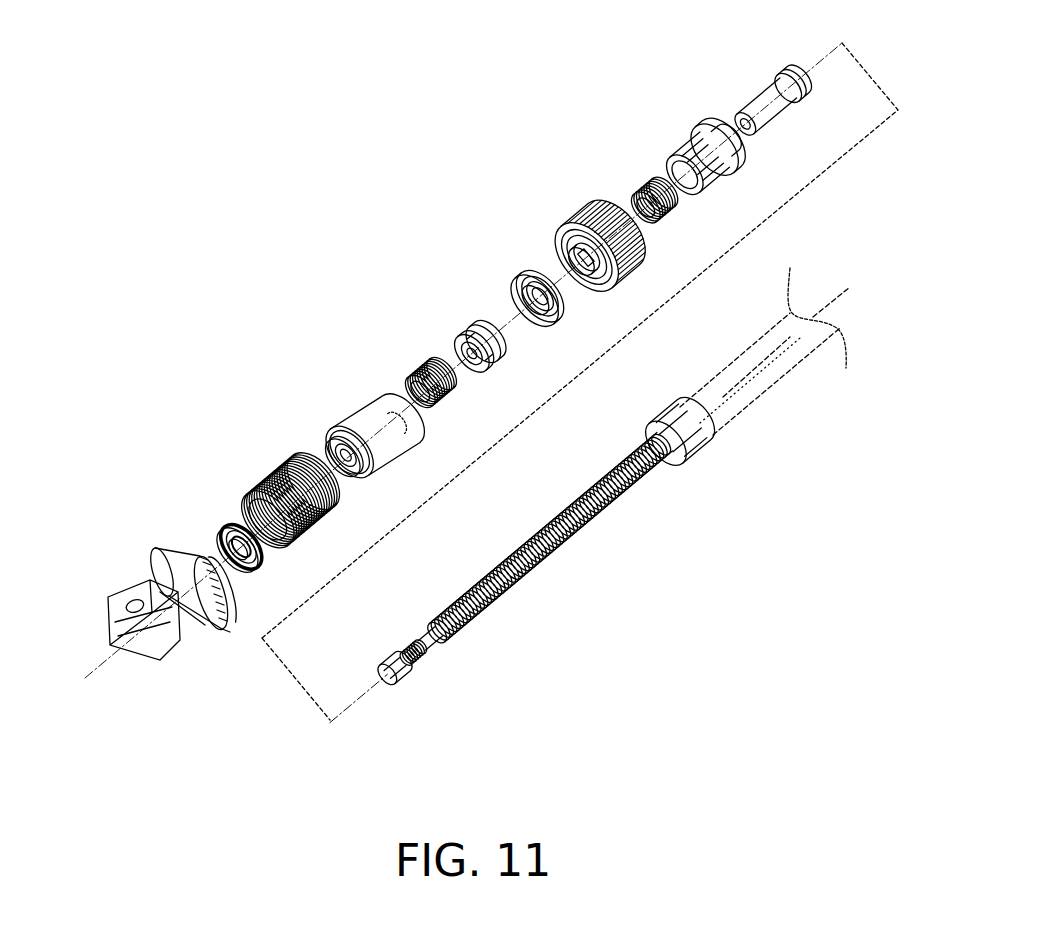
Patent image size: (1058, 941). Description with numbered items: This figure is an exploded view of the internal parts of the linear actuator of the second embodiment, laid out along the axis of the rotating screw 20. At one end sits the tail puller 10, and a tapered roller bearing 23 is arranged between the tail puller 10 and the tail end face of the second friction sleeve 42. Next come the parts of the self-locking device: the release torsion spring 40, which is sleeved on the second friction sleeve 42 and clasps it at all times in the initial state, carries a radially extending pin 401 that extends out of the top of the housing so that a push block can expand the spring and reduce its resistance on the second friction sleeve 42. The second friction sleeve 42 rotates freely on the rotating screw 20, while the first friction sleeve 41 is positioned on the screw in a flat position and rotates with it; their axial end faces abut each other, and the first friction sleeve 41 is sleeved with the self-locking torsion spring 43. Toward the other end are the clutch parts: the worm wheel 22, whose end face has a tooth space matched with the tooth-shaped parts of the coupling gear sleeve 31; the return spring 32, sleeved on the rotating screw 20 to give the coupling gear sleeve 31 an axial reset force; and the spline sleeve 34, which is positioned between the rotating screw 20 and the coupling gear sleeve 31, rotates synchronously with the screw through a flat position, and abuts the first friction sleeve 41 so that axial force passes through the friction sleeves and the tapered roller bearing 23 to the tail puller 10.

The tail puller 10 is at (150, 588).
The rotating screw 20 is at (538, 565).
The worm wheel 22 is at (582, 222).
The tapered roller bearing 23 is at (228, 535).
The coupling gear sleeve 31 is at (700, 148).
The return spring 32 is at (642, 188).
The spline sleeve 34 is at (775, 92).
The release torsion spring 40 is at (268, 480).
The pin 401 is at (330, 445).
The first friction sleeve 41 is at (470, 325).
The second friction sleeve 42 is at (352, 420).
The self-locking torsion spring 43 is at (425, 370).